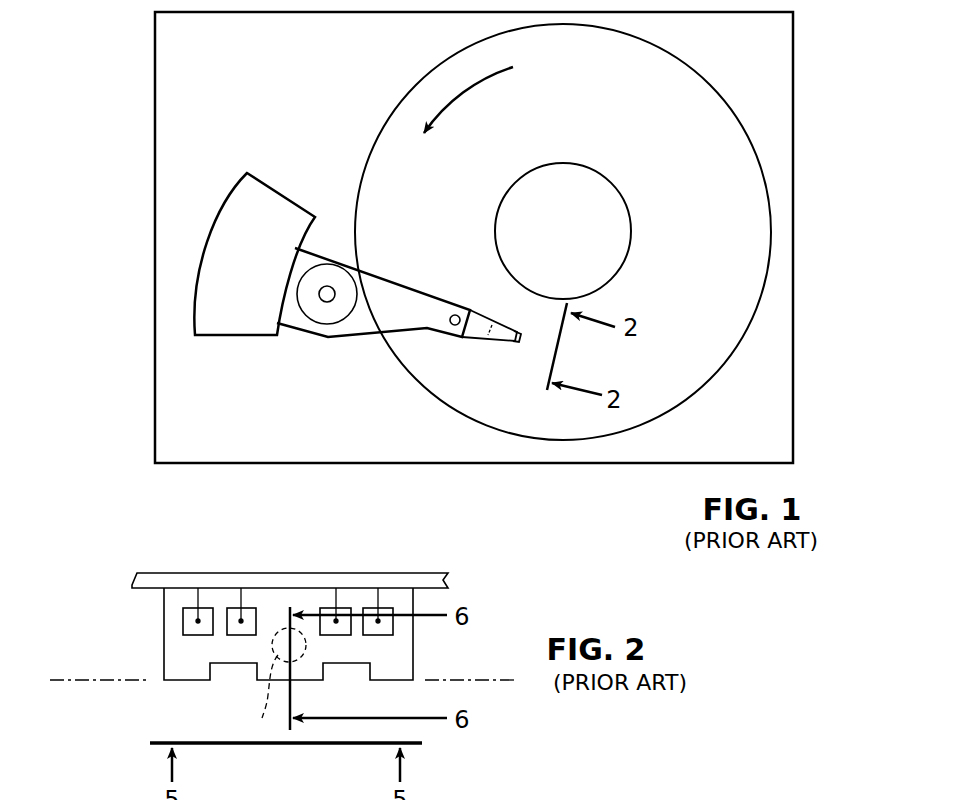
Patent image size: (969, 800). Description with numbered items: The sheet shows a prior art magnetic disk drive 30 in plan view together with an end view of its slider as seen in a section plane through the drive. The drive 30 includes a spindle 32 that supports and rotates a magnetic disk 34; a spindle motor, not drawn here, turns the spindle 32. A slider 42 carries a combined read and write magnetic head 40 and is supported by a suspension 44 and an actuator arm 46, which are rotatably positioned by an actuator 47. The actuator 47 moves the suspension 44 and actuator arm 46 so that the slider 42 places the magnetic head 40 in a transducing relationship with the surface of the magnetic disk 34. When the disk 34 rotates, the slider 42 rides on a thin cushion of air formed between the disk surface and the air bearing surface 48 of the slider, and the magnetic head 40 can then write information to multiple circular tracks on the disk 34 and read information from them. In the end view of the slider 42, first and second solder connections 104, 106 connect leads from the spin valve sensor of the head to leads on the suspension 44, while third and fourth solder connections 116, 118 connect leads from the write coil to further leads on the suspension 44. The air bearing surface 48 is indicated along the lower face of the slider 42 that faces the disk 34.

In FIG. 1, the magnetic disk drive 30 is at (812, 47).
In FIG. 1, the spindle 32 is at (598, 173).
In FIG. 1, the magnetic disk 34 is at (688, 251).
In FIG. 1, the magnetic head 40 is at (523, 344).
In FIG. 2, the magnetic head 40 is at (269, 684).
In FIG. 1, the slider 42 is at (520, 327).
In FIG. 2, the slider 42 is at (164, 620).
In FIG. 1, the suspension 44 is at (478, 340).
In FIG. 1, the actuator arm 46 is at (418, 297).
In FIG. 1, the actuator 47 is at (288, 202).
In FIG. 2, the air bearing surface 48 is at (80, 682).
In FIG. 2, the first solder connection 104 is at (185, 612).
In FIG. 2, the third solder connection 116 is at (228, 612).
In FIG. 2, the fourth solder connection 118 is at (321, 608).
In FIG. 2, the second solder connection 106 is at (363, 608).